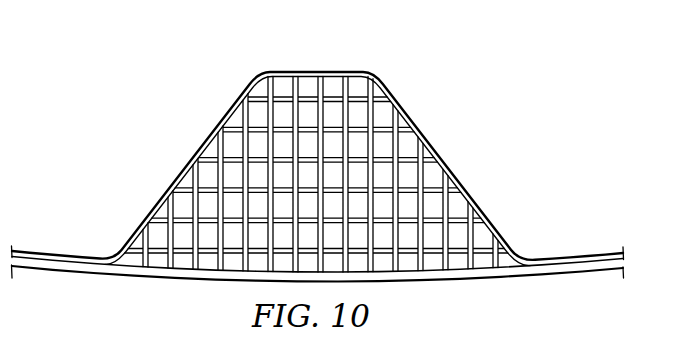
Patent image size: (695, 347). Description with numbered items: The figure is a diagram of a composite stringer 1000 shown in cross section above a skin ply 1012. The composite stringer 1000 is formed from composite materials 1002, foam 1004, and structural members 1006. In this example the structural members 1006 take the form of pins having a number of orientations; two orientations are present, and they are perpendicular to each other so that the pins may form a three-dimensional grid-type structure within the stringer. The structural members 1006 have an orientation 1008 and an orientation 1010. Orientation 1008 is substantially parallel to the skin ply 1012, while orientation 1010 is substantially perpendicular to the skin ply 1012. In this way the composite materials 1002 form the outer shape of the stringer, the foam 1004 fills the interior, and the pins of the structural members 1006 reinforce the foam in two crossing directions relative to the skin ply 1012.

The composite stringer 1000 is at (357, 70).
The composite materials 1002 is at (305, 70).
The foam 1004 is at (433, 176).
The structural members 1006 is at (236, 117).
The orientation 1008 is at (165, 225).
The orientation 1010 is at (153, 232).
The skin ply 1012 is at (459, 280).